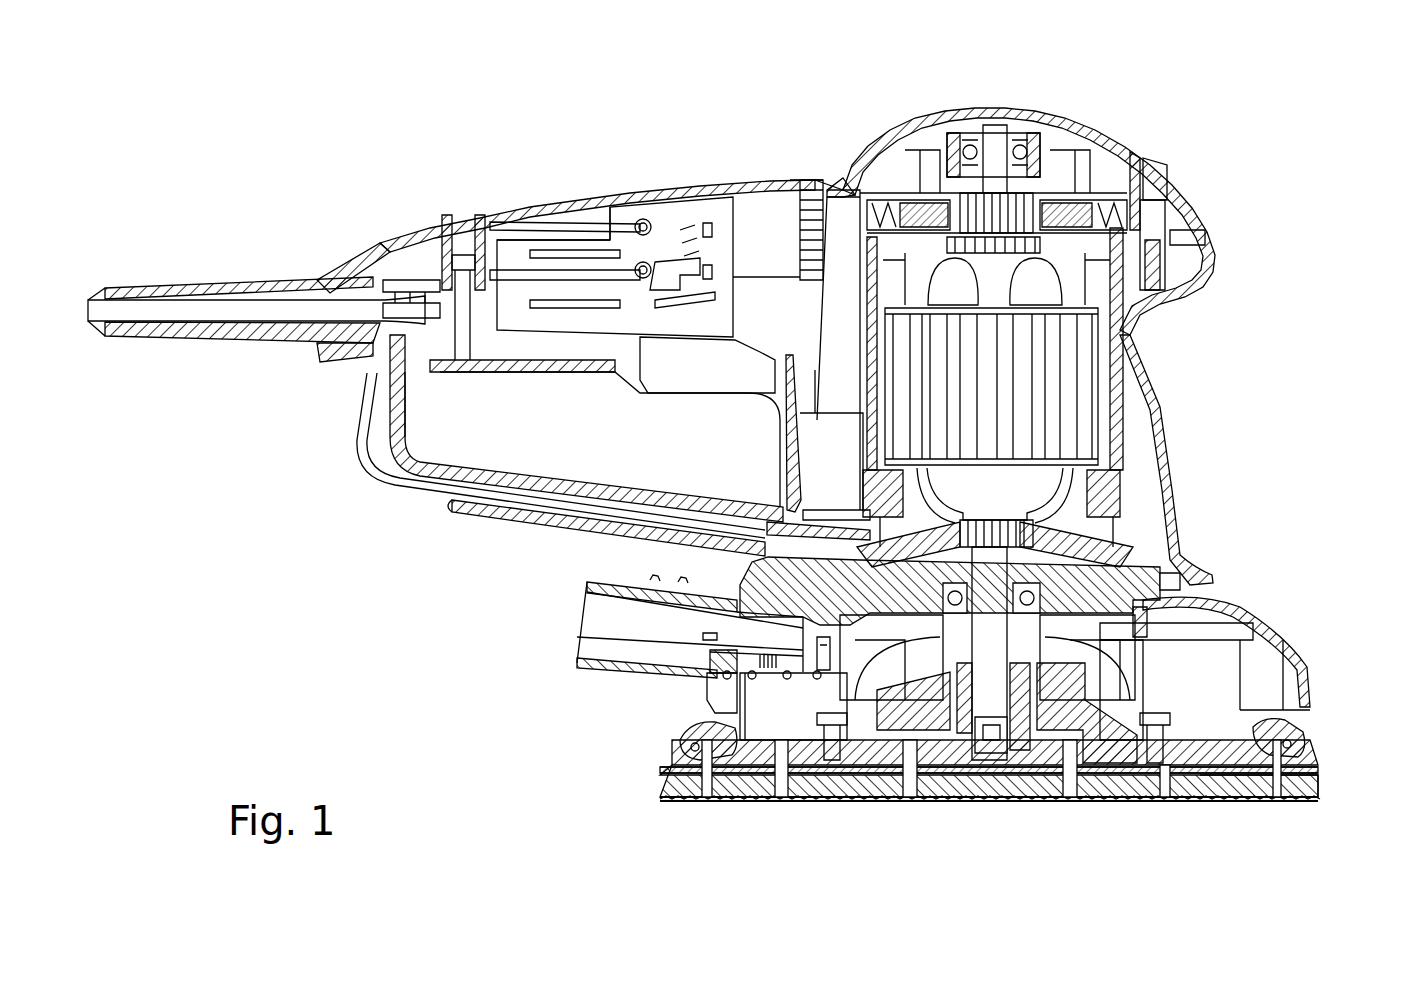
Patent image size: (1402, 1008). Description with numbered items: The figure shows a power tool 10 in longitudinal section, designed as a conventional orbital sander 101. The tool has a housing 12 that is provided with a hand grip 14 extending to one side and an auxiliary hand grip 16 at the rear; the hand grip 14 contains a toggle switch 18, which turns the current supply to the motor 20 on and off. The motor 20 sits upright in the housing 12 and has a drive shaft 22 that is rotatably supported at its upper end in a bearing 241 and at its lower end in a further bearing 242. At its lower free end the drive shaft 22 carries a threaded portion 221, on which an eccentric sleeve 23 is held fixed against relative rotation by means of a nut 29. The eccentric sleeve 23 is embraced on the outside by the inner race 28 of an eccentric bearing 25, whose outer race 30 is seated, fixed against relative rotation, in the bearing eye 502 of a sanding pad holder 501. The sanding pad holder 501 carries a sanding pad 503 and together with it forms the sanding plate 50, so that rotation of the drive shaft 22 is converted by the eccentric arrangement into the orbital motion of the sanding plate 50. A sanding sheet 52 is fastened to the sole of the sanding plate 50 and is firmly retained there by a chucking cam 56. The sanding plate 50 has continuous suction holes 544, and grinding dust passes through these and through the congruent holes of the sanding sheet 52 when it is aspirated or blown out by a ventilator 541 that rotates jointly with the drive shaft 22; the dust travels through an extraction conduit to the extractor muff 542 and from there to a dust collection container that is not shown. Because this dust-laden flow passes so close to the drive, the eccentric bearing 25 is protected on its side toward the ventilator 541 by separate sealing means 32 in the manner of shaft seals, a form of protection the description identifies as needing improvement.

The power tool 10 is at (1123, 128).
The orbital sander 101 is at (1158, 152).
The housing 12 is at (1163, 407).
The hand grip 14 is at (690, 180).
The auxiliary hand grip 16 is at (1222, 240).
The toggle switch 18 is at (750, 380).
The motor 20 is at (1030, 360).
The drive shaft 22 is at (1127, 553).
The threaded portion 221 is at (993, 750).
The eccentric sleeve 23 is at (1022, 720).
The bearing 241 is at (1012, 140).
The bearing 242 is at (1093, 560).
The eccentric bearing 25 is at (1040, 710).
The inner race 28 is at (908, 745).
The nut 29 is at (968, 740).
The outer race 30 is at (850, 690).
The sealing means 32 is at (1103, 648).
The sanding plate 50 is at (1322, 770).
The sanding pad holder 501 is at (757, 748).
The bearing eye 502 is at (712, 648).
The sanding pad 503 is at (1233, 785).
The sanding sheet 52 is at (680, 802).
The ventilator 541 is at (1163, 583).
The extractor muff 542 is at (590, 585).
The suction holes 544 is at (832, 790).
The chucking cam 56 is at (680, 737).